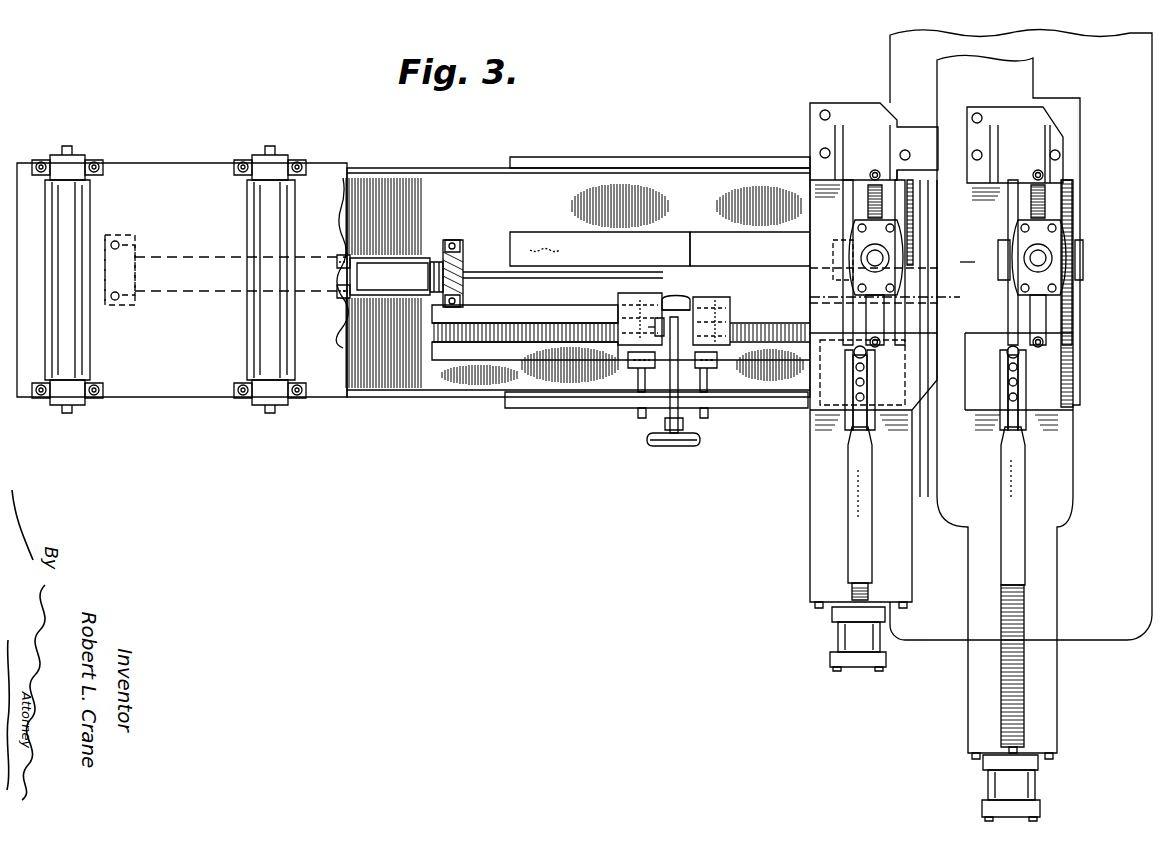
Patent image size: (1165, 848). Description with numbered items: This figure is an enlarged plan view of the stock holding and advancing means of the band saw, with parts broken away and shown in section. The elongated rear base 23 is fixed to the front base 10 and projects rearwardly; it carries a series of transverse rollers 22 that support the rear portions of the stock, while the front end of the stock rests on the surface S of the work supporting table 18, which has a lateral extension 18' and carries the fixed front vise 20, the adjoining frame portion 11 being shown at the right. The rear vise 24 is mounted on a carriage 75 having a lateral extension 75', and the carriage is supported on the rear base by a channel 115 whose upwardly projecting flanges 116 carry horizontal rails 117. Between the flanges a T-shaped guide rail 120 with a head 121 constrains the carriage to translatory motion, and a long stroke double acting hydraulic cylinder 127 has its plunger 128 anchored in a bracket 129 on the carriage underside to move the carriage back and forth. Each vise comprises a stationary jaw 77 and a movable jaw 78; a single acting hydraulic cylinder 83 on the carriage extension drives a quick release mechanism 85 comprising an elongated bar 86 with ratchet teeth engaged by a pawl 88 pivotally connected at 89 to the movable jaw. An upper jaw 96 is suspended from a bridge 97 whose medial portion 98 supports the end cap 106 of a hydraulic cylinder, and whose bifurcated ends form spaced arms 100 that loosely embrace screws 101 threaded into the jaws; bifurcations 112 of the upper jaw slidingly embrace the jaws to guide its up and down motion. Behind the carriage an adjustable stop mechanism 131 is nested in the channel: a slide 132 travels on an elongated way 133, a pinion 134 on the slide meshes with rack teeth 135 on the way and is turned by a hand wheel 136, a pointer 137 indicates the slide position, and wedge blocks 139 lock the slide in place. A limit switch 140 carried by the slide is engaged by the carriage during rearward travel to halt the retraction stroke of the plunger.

The base 10 is at (922, 665).
The frame 11 is at (1108, 638).
The work supporting table 18 is at (1008, 404).
The lateral extension of work table 18' is at (951, 640).
The front vise 20 is at (1086, 170).
The transverse rollers 22 is at (80, 207).
The rear base 23 is at (345, 400).
The rear vise 24 is at (795, 130).
The carriage 75 is at (861, 394).
The lateral extension of carriage 75' is at (790, 506).
The stationary jaw 77 is at (862, 116).
The movable jaw 78 is at (820, 400).
The single acting hydraulic cylinder 83 is at (850, 637).
The quick release mechanism 85 is at (838, 500).
The elongated bar 86 is at (866, 598).
The pawl 88 is at (870, 520).
The pivotal connection 89 is at (880, 432).
The upper jaw 96 is at (1002, 220).
The bridge 97 is at (1040, 307).
The medial portion of bridge 98 is at (1026, 264).
The spaced arms 100 is at (858, 212).
The screws 101 is at (874, 170).
The end cap 106 is at (850, 256).
The bifurcations 112 is at (845, 233).
The channel 115 is at (384, 378).
The flanges 116 is at (460, 152).
The horizontal rails 117 is at (567, 160).
The guide rail 120 is at (546, 236).
The head of guide rail 121 is at (598, 216).
The double acting hydraulic cylinder 127 is at (343, 248).
The plunger 128 is at (485, 270).
The bracket 129 is at (940, 297).
The adjustable stop mechanism 131 is at (708, 302).
The slide 132 is at (632, 300).
The elongated way 133 is at (510, 314).
The pinion 134 is at (648, 327).
The rack teeth 135 is at (468, 345).
The hand wheel 136 is at (672, 446).
The pointer 137 is at (682, 410).
The wedge blocks 139 is at (636, 362).
The limit switch 140 is at (676, 305).
The work supporting surface S is at (967, 254).